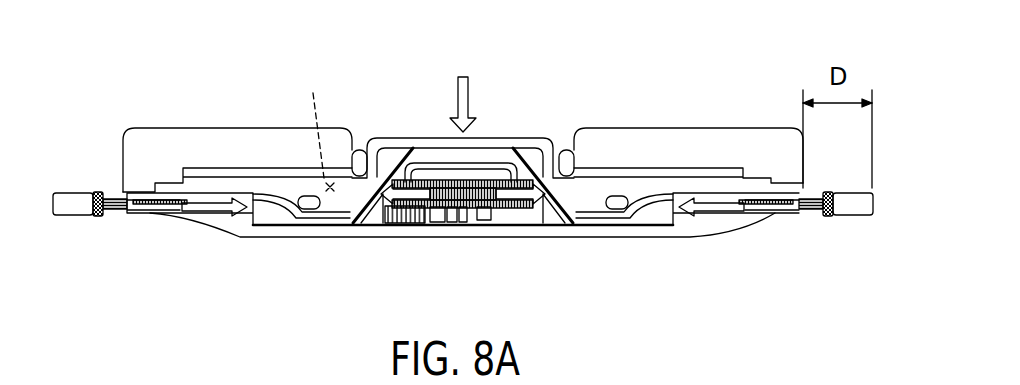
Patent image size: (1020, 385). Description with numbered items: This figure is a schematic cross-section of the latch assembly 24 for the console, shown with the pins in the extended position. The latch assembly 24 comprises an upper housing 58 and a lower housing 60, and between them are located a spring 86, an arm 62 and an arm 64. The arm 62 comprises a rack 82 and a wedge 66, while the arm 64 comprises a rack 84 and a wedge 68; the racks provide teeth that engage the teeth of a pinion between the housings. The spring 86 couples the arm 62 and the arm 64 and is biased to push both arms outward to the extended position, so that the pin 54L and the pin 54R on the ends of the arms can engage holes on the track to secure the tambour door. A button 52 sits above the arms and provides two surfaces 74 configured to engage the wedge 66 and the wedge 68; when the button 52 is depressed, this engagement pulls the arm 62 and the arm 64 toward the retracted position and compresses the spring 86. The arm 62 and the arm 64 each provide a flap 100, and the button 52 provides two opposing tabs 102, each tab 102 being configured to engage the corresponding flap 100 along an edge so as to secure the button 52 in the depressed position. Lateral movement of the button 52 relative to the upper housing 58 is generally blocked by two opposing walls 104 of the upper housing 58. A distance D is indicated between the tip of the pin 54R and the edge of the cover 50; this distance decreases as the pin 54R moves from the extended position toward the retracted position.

The latch assembly 24 is at (687, 47).
The cover 50 is at (205, 142).
The button 52 is at (500, 143).
The pin 54L is at (73, 197).
The pin 54R is at (851, 207).
The upper housing 58 is at (180, 168).
The lower housing 60 is at (593, 232).
The arm 62 is at (780, 207).
The arm 64 is at (153, 207).
The wedge 66 is at (556, 220).
The wedge 68 is at (357, 218).
The surfaces 74 is at (358, 160).
The rack 82 is at (483, 221).
The rack 84 is at (405, 226).
The spring 86 is at (444, 223).
The flap 100 is at (328, 196).
The tabs 102 is at (333, 192).
The walls 104 is at (317, 129).